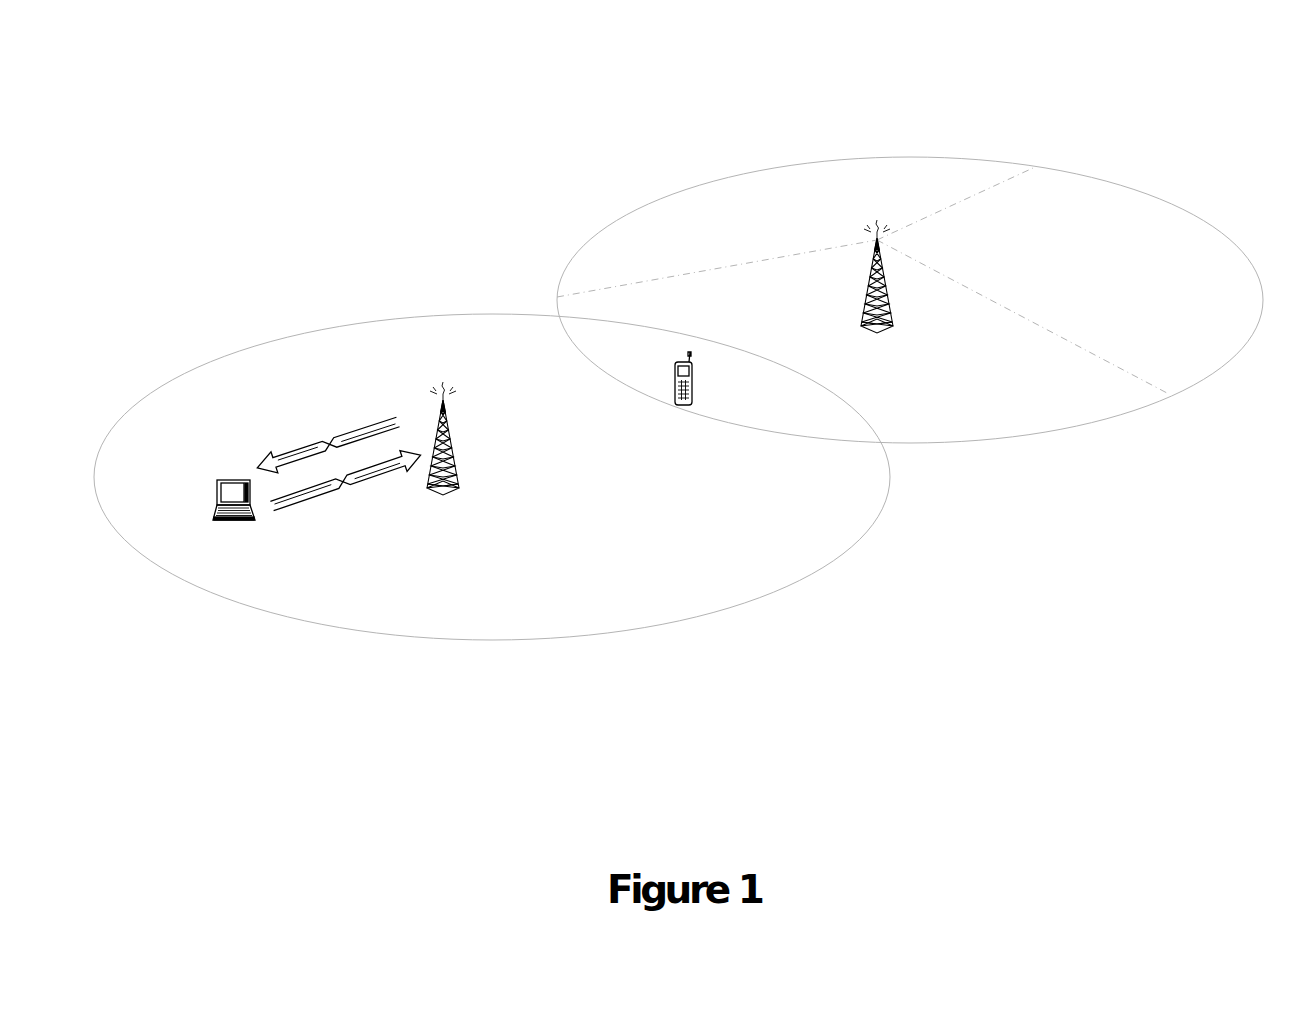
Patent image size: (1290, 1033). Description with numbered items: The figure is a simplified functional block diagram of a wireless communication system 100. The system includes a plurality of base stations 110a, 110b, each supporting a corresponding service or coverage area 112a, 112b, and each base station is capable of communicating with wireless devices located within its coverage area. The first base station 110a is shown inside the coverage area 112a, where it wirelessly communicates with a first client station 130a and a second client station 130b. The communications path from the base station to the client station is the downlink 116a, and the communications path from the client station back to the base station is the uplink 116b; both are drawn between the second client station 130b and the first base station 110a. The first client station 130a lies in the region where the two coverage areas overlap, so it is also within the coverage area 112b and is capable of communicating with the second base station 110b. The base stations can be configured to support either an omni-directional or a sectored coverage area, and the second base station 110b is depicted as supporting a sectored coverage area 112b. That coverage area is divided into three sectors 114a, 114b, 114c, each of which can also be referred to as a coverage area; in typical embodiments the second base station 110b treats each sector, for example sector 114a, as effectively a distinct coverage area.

The wireless communication system 100 is at (1045, 68).
The first base station 110a is at (492, 438).
The second base station 110b is at (928, 300).
The coverage area 112a is at (405, 315).
The sectored coverage area 112b is at (852, 155).
The sector 114a is at (994, 416).
The sector 114b is at (807, 213).
The sector 114c is at (1215, 303).
The downlink 116a is at (363, 423).
The uplink 116b is at (347, 495).
The first client station 130a is at (697, 393).
The second client station 130b is at (210, 497).